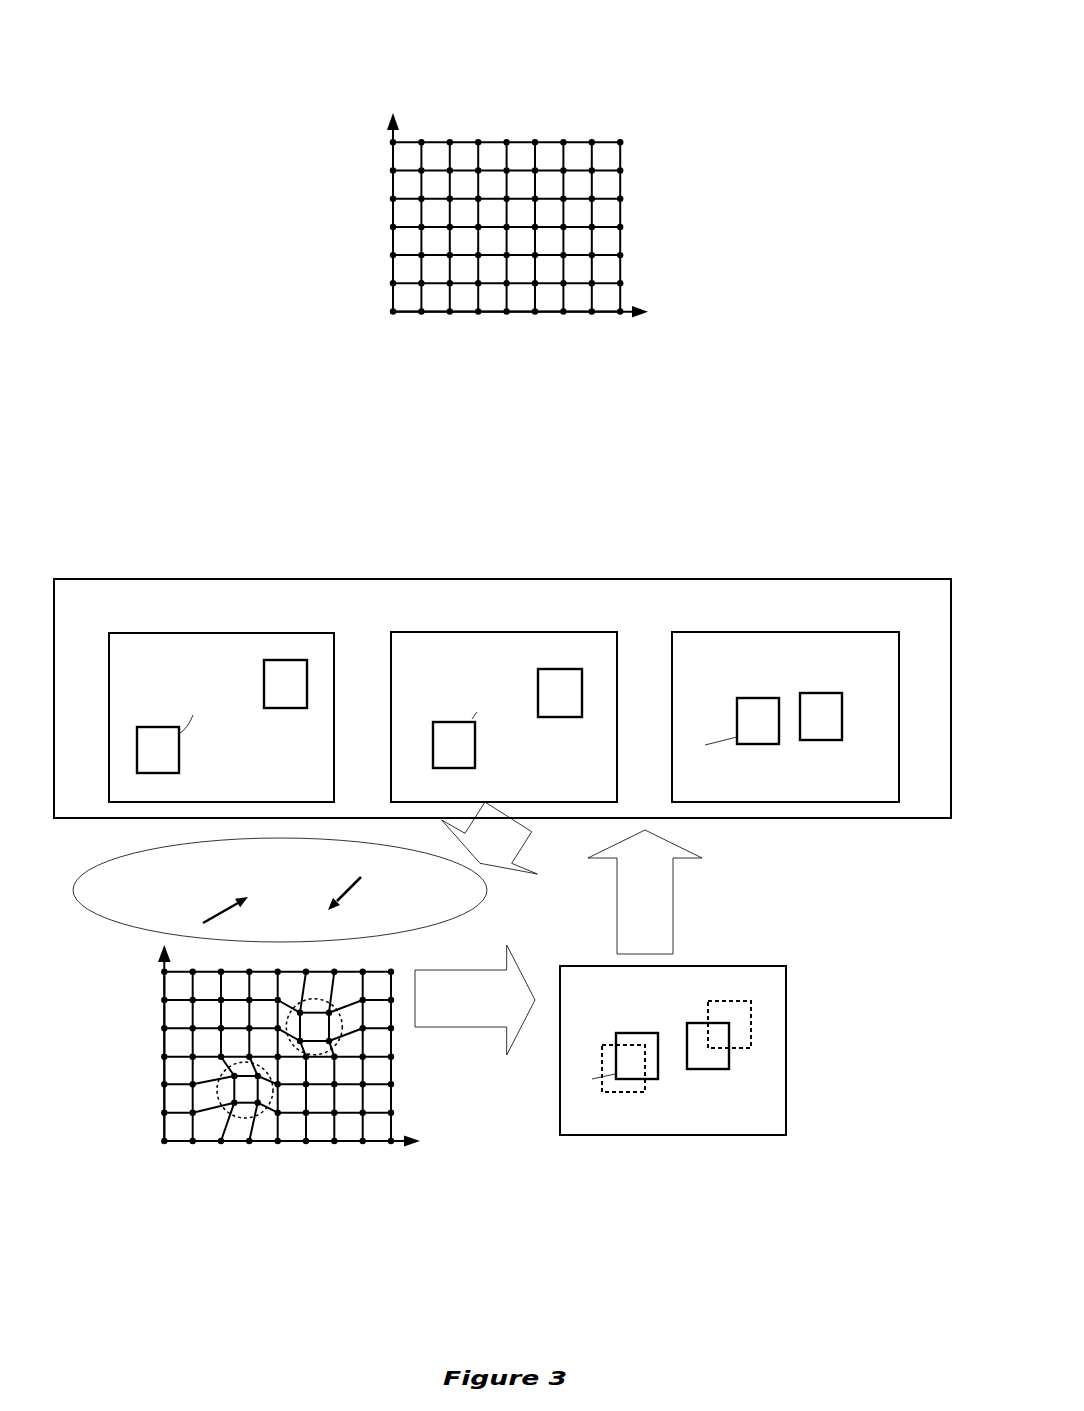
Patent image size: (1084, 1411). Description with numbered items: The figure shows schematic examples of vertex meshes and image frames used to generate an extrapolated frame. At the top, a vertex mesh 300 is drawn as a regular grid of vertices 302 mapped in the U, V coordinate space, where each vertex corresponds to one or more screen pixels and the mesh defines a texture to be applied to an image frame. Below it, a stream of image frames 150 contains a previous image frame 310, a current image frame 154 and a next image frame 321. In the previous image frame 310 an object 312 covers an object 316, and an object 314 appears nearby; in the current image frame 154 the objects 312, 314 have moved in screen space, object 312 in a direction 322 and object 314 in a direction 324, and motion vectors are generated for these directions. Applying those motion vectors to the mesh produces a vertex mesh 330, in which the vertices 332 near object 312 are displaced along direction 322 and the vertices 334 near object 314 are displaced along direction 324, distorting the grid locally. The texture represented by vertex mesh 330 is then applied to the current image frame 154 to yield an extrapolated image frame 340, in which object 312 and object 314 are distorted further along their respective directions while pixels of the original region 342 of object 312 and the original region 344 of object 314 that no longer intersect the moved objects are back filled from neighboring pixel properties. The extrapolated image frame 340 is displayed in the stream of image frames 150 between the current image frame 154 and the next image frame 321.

The vertex mesh 300 is at (328, 48).
The vertices 302 is at (421, 197).
The stream of image frames 150 is at (290, 578).
The image frame 310 is at (173, 632).
The image frame 154 is at (466, 632).
The next image frame 321 is at (746, 632).
The object 312 is at (165, 727).
The object 314 is at (280, 660).
The object 316 is at (190, 728).
The direction 322 is at (221, 910).
The direction 324 is at (350, 893).
The vertex mesh 330 is at (158, 1191).
The vertices 332 is at (215, 1094).
The vertices 334 is at (343, 1028).
The extrapolated image frame 340 is at (758, 966).
The original region 342 is at (639, 1091).
The original region 344 is at (747, 1048).